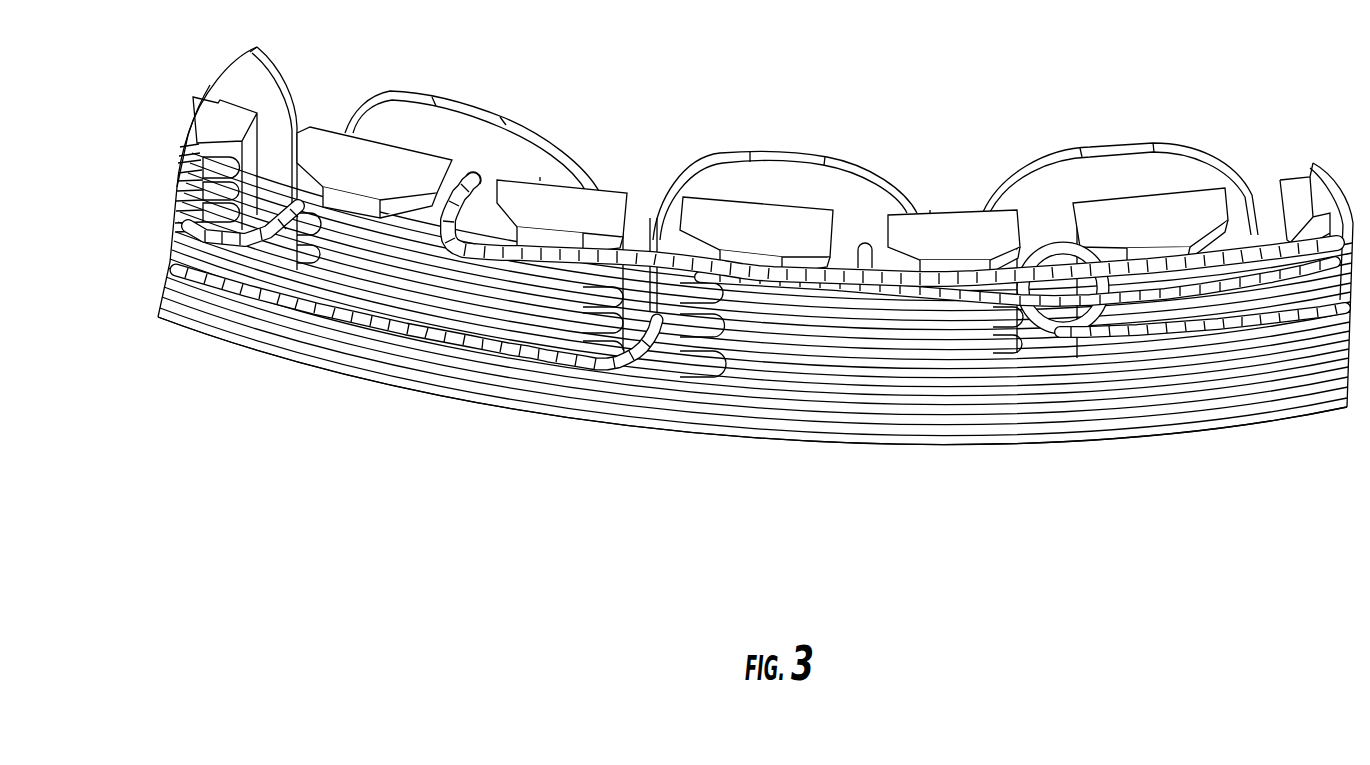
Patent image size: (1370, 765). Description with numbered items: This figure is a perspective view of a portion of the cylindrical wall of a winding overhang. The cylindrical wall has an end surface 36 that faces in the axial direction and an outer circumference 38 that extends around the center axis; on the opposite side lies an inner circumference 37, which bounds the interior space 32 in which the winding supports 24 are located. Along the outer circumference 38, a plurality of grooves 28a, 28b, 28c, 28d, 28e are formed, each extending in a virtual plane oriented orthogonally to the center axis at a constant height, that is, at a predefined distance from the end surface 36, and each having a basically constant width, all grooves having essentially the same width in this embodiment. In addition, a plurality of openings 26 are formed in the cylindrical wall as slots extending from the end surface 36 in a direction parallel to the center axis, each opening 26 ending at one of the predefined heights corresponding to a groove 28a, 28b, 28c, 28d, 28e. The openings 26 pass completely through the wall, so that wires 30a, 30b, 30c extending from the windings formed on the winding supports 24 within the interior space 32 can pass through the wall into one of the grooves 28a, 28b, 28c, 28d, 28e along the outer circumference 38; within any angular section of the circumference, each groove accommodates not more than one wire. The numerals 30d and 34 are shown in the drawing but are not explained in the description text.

The winding support 24 is at (557, 105).
The opening 26 is at (314, 113).
The groove 28a is at (166, 149).
The groove 28b is at (166, 176).
The groove 28c is at (166, 219).
The groove 28d is at (159, 252).
The groove 28e is at (153, 289).
The wire 30a is at (474, 174).
The wire 30b is at (864, 260).
The wire 30c is at (1080, 323).
The fourth conductor hairpin 30d is at (643, 347).
The interior space 32 is at (768, 40).
The second axial side 34 is at (818, 533).
The end surface 36 is at (951, 220).
The inner circumference 37 is at (965, 66).
The outer circumference 38 is at (470, 420).